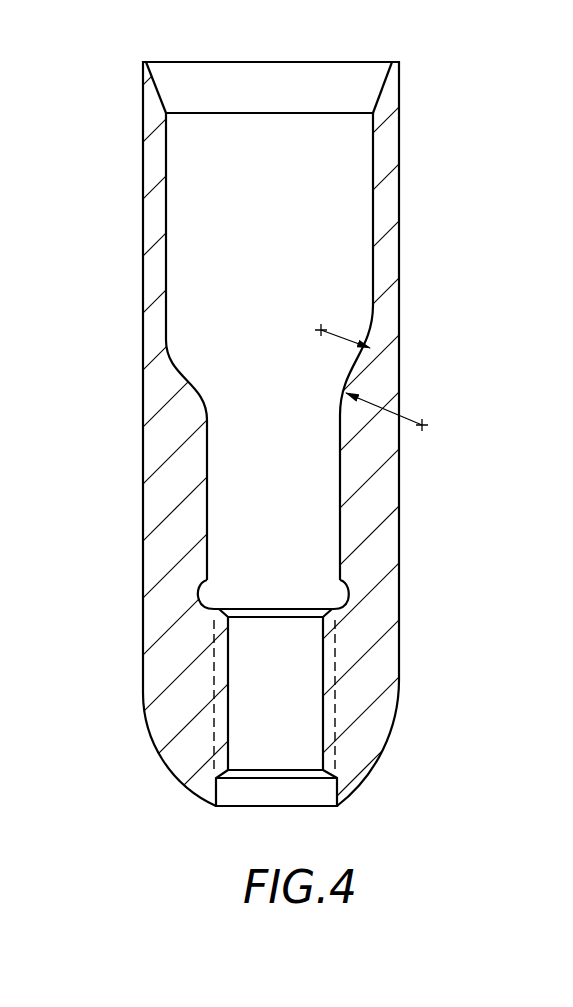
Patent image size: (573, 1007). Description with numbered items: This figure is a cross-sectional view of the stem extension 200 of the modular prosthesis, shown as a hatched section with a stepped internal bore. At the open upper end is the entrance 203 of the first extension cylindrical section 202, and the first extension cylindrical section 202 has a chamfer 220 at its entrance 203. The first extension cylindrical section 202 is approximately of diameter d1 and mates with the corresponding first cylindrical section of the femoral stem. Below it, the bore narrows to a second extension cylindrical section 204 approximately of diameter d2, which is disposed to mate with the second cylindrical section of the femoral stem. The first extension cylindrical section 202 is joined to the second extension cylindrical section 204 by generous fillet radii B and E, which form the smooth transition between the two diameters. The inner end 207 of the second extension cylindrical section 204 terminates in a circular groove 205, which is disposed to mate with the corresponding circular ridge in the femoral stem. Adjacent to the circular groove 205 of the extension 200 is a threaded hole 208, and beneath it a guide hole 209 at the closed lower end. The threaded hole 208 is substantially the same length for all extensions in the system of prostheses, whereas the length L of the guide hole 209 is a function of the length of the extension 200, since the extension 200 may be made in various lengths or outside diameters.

The extension 200 is at (416, 125).
The first extension cylindrical section 202 is at (393, 170).
The entrance 203 is at (143, 62).
The second extension cylindrical section 204 is at (362, 492).
The circular groove 205 is at (208, 601).
The inner end 207 is at (237, 575).
The threaded hole 208 is at (322, 678).
The guide hole 209 is at (297, 790).
The chamfer 220 is at (372, 86).
The fillet radius B is at (344, 333).
The fillet radius E is at (382, 412).
The diameter of first extension cylindrical section d1 is at (167, 230).
The diameter of second extension cylindrical section d2 is at (208, 533).
The length of guide hole L is at (345, 778).